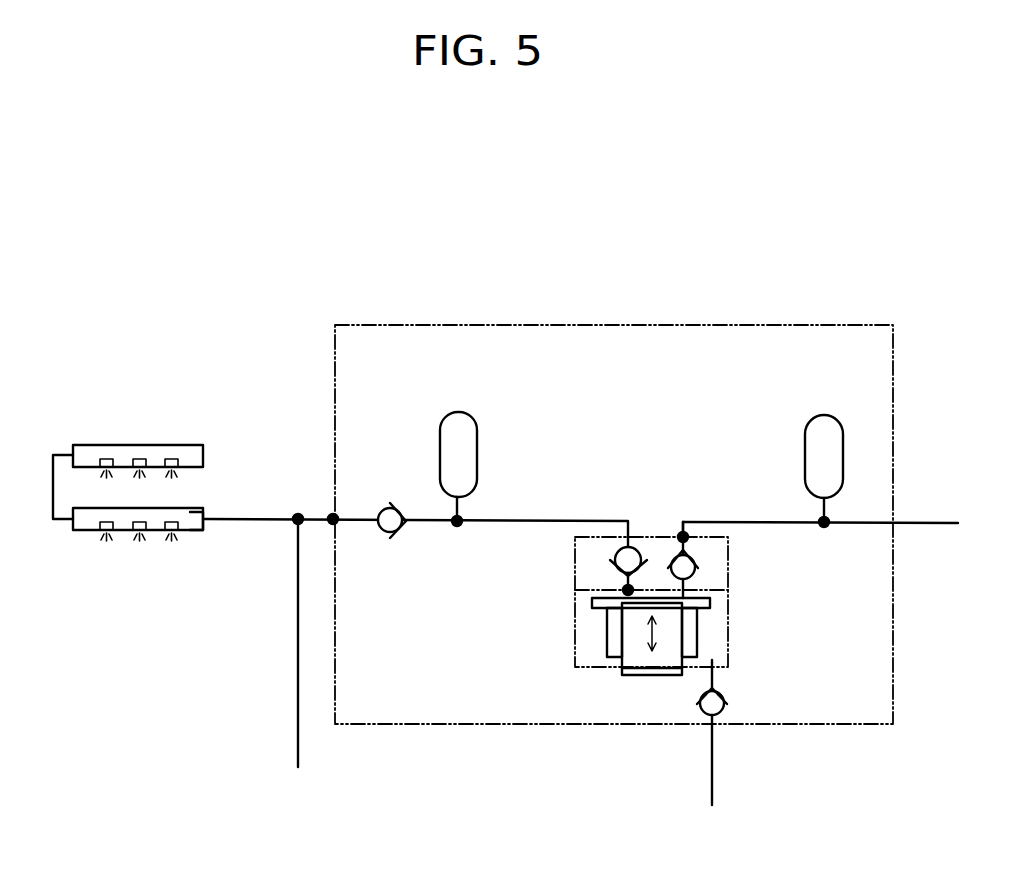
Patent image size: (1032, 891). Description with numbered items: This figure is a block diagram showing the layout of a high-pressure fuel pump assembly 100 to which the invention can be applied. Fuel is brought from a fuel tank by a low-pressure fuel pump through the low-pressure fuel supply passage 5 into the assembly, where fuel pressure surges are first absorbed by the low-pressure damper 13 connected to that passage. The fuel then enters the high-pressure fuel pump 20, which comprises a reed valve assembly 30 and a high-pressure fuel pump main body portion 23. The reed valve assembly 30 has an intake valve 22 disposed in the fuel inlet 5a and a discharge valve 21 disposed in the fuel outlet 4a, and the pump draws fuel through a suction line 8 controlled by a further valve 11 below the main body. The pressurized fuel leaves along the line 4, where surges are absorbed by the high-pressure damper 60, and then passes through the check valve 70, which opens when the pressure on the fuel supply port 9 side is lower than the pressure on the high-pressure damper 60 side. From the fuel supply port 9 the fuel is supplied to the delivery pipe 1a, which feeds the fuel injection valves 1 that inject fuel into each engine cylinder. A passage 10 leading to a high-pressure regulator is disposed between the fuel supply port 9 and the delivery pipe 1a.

The fuel injection valves 1 is at (98, 529).
The delivery pipe 1a is at (200, 531).
The supply line 4 is at (492, 522).
The fuel outlet 4a is at (597, 606).
The low-pressure fuel supply passage 5 is at (857, 523).
The fuel inlet 5a is at (688, 537).
The suction line 8 is at (715, 676).
The fuel supply port 9 is at (333, 518).
The passage 10 is at (298, 630).
The check valve 11 is at (701, 709).
The low-pressure damper 13 is at (824, 437).
The high-pressure fuel pump 20 is at (575, 592).
The discharge valve 21 is at (606, 577).
The intake valve 22 is at (697, 571).
The high-pressure fuel pump main body portion 23 is at (593, 667).
The reed valve assembly 30 is at (728, 570).
The high-pressure damper 60 is at (457, 412).
The check valve 70 is at (378, 533).
The high-pressure fuel pump assembly 100 is at (762, 325).